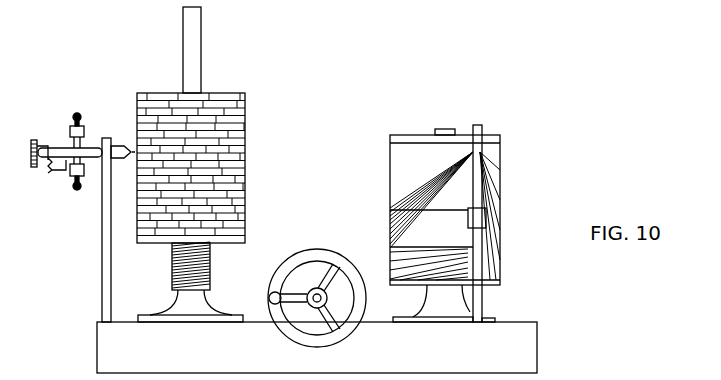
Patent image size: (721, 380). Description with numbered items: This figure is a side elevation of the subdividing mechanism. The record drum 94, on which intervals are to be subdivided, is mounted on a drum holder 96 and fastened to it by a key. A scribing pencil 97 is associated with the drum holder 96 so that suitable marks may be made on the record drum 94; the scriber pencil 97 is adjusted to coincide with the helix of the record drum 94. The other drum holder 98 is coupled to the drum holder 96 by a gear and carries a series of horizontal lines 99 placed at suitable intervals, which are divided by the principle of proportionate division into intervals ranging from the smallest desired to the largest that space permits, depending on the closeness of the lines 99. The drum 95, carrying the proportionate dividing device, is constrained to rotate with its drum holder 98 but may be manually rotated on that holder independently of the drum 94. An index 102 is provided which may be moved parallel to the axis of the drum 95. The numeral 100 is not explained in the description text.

The record drum 94 is at (246, 94).
The laminated core 100 is at (245, 131).
The drum holder 96 is at (212, 308).
The scribing pencil 97 is at (108, 137).
The drum 95 is at (500, 137).
The index 102 is at (468, 221).
The horizontal lines 99 is at (486, 216).
The drum holder 98 is at (495, 321).